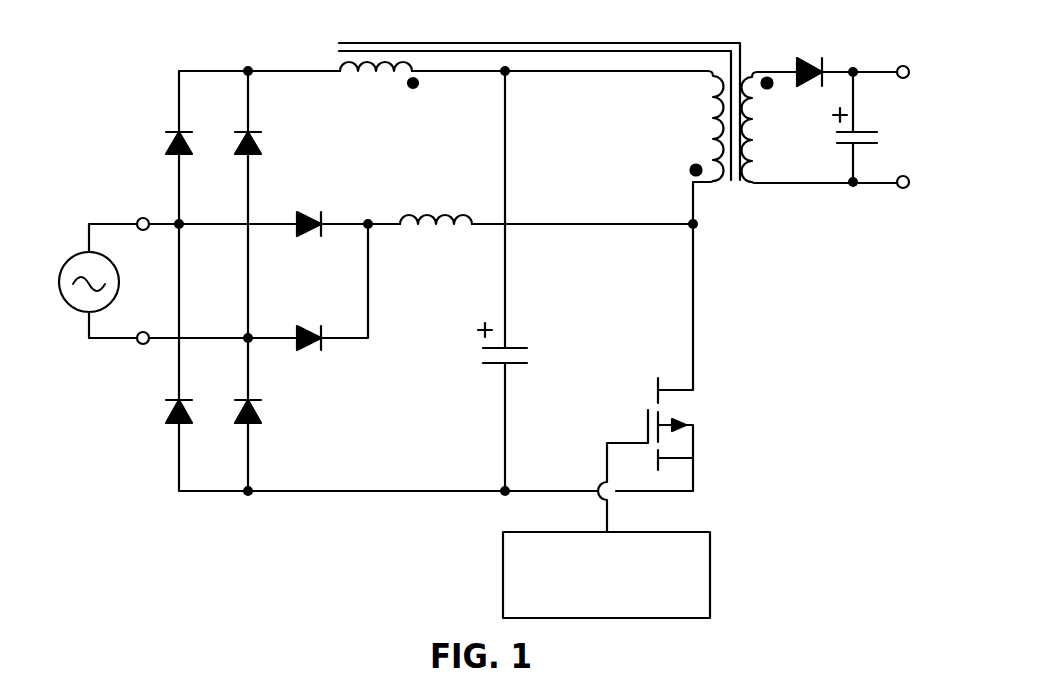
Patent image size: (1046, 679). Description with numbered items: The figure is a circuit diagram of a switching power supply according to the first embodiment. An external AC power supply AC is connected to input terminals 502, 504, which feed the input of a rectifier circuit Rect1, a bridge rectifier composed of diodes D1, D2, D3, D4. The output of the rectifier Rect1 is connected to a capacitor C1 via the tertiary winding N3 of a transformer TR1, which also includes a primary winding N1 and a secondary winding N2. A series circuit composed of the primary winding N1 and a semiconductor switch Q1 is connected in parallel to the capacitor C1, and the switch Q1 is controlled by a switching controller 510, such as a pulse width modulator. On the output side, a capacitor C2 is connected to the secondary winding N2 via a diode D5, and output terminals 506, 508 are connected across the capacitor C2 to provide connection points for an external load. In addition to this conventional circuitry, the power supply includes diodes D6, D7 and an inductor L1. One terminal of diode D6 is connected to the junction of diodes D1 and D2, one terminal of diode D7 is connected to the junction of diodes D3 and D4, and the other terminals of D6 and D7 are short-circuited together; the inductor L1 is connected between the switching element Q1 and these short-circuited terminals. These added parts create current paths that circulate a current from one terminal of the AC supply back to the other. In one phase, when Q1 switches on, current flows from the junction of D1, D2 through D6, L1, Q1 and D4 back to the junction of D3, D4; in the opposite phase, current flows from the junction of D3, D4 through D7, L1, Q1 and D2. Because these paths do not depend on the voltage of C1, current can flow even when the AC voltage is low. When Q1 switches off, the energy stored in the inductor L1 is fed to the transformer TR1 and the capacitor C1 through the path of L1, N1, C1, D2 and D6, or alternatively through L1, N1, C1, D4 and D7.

The input terminal 502 is at (139, 219).
The input terminal 504 is at (138, 344).
The output terminal 506 is at (906, 66).
The output terminal 508 is at (906, 189).
The switching controller 510 is at (710, 576).
The diode D1 is at (159, 144).
The diode D2 is at (157, 415).
The diode D3 is at (268, 144).
The diode D4 is at (269, 415).
The diode D5 is at (811, 58).
The diode D6 is at (306, 208).
The diode D7 is at (311, 321).
The inductor L1 is at (436, 204).
The capacitor C1 is at (519, 346).
The capacitor C2 is at (876, 129).
The transformer TR1 is at (618, 119).
The primary winding N1 is at (698, 147).
The secondary winding N2 is at (820, 127).
The tertiary winding N3 is at (379, 81).
The semiconductor switch Q1 is at (673, 378).
The AC power supply AC is at (89, 255).
The rectifier circuit Rect1 is at (257, 296).